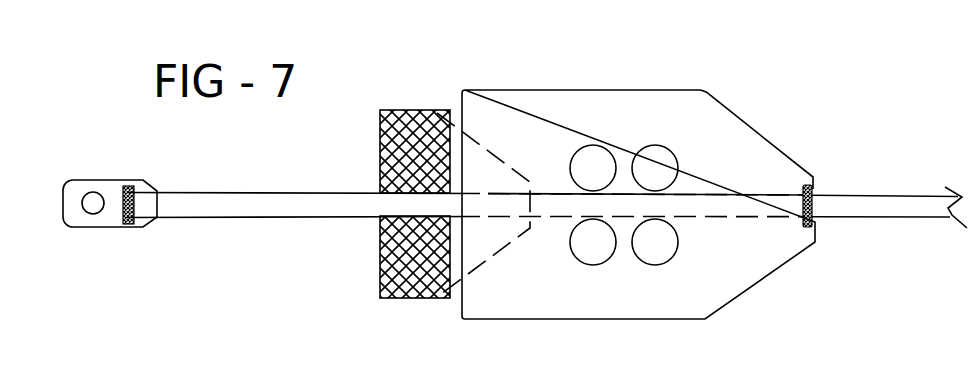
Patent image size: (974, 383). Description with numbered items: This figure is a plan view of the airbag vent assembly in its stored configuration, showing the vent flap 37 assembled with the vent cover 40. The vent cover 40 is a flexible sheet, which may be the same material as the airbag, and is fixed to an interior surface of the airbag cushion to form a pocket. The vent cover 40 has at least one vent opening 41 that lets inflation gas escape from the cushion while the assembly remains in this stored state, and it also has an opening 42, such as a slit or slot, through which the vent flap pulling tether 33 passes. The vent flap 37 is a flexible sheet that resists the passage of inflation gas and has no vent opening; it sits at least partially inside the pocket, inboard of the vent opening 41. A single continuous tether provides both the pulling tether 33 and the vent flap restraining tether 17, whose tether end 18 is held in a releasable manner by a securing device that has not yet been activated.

The vent flap restraining tether 17 is at (242, 210).
The tether end 18 is at (111, 209).
The vent flap pulling tether 33 is at (879, 197).
The vent flap 37 is at (410, 112).
The vent cover 40 is at (547, 105).
The vent opening 41 is at (595, 163).
The opening 42 is at (815, 177).